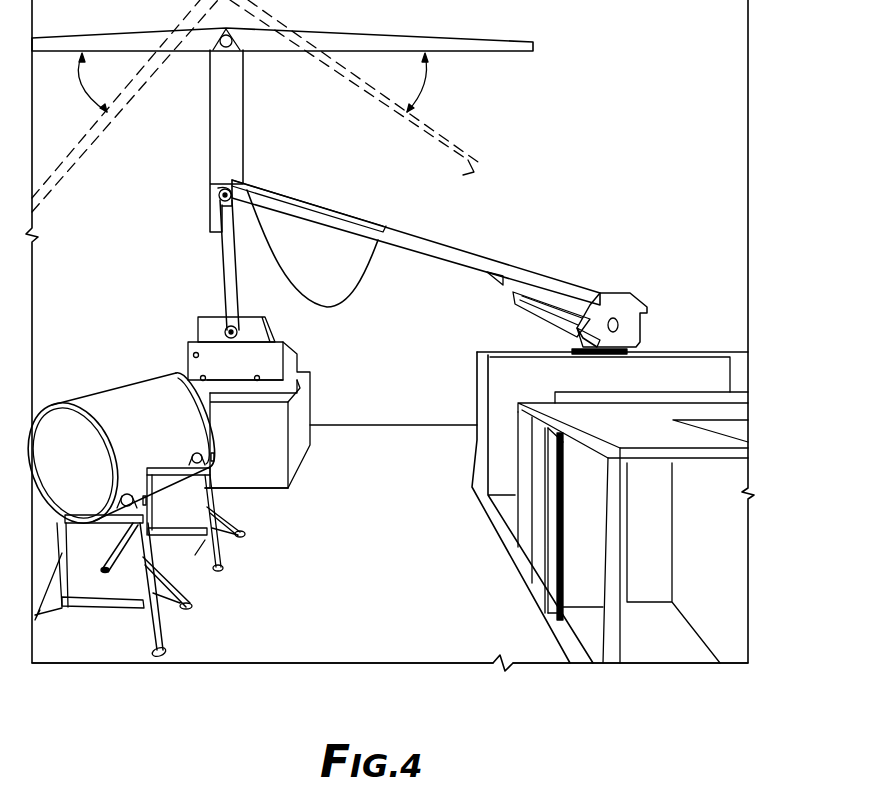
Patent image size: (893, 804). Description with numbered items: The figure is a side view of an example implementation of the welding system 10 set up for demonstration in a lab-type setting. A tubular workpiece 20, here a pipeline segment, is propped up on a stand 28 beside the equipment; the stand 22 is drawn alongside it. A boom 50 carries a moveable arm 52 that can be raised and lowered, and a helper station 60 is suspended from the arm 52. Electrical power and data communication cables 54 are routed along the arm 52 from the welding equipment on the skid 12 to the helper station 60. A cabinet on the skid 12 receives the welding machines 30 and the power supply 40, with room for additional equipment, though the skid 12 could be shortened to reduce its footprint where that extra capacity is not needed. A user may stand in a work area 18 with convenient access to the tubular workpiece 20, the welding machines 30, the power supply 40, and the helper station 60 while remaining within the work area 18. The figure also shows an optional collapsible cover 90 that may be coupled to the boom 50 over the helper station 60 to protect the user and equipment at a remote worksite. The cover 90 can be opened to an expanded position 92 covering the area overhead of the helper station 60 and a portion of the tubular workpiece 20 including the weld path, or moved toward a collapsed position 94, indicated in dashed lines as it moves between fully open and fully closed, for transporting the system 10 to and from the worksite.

The system 10 is at (575, 147).
The skid 12 is at (576, 677).
The work area 18 is at (336, 571).
The tubular workpiece 20 is at (133, 403).
The pipe stand 22 is at (324, 628).
The stand 28 is at (147, 637).
The welding machines 30 is at (512, 545).
The power supply 40 is at (717, 403).
The boom 50 is at (620, 249).
The arm 52 is at (347, 210).
The electrical power and data communication cables 54 is at (460, 247).
The helper station 60 is at (200, 303).
The collapsible cover 90 is at (194, 76).
The expanded position 92 is at (513, 43).
The collapsed position 94 is at (432, 127).